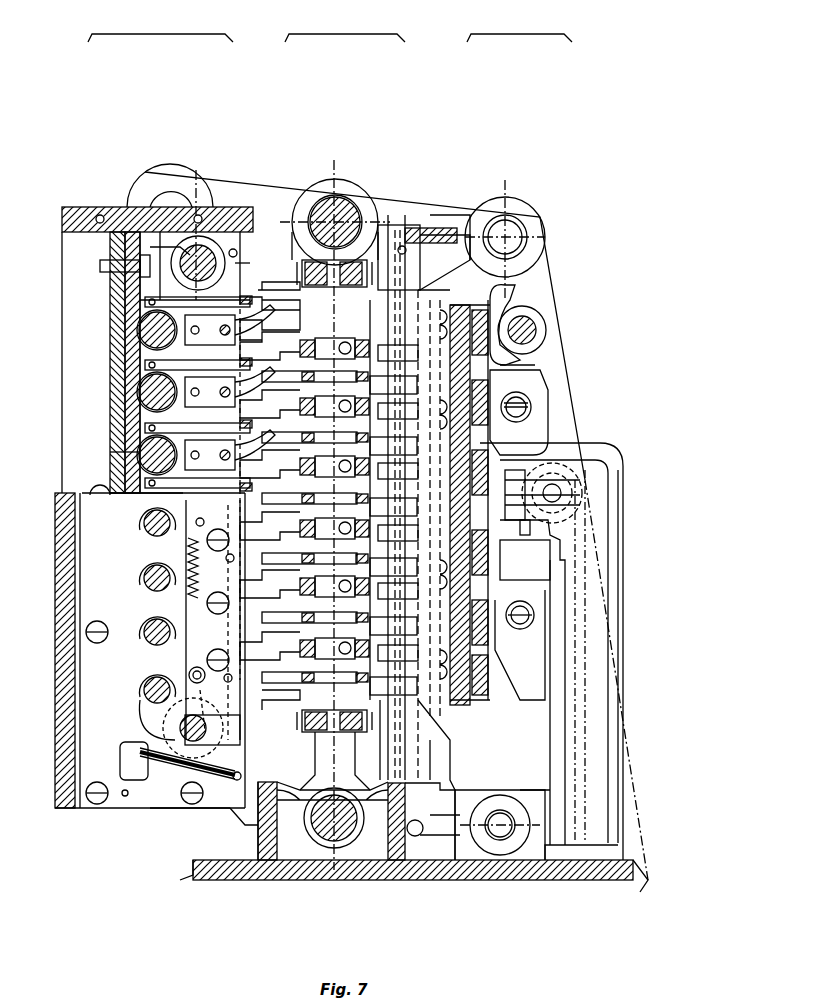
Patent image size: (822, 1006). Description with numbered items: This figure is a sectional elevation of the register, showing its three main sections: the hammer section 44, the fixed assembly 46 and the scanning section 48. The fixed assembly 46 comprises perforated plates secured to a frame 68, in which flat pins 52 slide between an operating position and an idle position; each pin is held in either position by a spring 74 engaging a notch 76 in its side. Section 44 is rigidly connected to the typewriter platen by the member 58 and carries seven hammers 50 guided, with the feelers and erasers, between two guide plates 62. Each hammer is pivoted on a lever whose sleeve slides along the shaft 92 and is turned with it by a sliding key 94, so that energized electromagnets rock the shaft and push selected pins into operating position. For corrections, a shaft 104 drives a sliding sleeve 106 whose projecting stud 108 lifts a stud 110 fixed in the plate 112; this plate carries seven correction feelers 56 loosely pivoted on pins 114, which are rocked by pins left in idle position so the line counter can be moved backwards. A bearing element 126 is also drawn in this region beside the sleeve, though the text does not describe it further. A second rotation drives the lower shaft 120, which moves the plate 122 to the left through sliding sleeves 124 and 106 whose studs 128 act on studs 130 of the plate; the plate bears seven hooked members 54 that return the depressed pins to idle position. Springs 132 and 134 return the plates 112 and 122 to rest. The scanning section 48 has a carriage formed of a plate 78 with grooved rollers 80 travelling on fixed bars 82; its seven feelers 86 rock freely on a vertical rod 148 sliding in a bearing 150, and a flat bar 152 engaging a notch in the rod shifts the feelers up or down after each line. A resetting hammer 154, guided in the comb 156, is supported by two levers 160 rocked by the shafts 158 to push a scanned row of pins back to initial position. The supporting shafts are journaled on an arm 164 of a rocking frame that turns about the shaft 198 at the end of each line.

The hammer section 44 is at (160, 28).
The fixed assembly 46 is at (345, 28).
The scanning section 48 is at (519, 28).
The hammer 50 is at (220, 335).
The flat pin 52 is at (306, 300).
The hooked member 54 is at (262, 648).
The correction feeler 56 is at (268, 298).
The connecting member 58 is at (85, 207).
The guide plate 62 is at (85, 744).
The frame 68 is at (200, 880).
The spring 74 is at (304, 489).
The notch 76 is at (317, 733).
The plate 78 is at (518, 367).
The grooved roller 80 is at (510, 395).
The fixed bar 82 is at (490, 465).
The feeler 86 is at (395, 326).
The shaft 92 is at (220, 397).
The sliding key 94 is at (140, 455).
The shaft 104 is at (128, 207).
The sliding sleeve 106 is at (210, 232).
The projecting stud 108 is at (257, 263).
The stud 110 is at (237, 253).
The plate 112 is at (184, 519).
The pin 114 is at (216, 460).
The lower shaft 120 is at (180, 731).
The plate 122 is at (185, 618).
The sliding sleeve 124 is at (160, 713).
The bearing 126 is at (159, 243).
The stud 128 is at (203, 690).
The stud 130 is at (150, 672).
The spring 132 is at (200, 560).
The spring 134 is at (148, 765).
The vertical rod 148 is at (393, 225).
The bearing 150 is at (412, 225).
The flat bar 152 is at (432, 235).
The resetting hammer 154 is at (428, 732).
The comb 156 is at (420, 395).
The shaft 158 is at (515, 322).
The lever 160 is at (540, 350).
The arm 164 is at (445, 200).
The shaft 198 is at (340, 834).